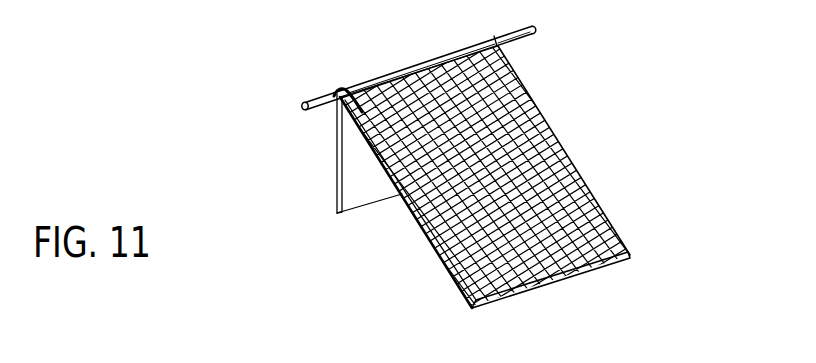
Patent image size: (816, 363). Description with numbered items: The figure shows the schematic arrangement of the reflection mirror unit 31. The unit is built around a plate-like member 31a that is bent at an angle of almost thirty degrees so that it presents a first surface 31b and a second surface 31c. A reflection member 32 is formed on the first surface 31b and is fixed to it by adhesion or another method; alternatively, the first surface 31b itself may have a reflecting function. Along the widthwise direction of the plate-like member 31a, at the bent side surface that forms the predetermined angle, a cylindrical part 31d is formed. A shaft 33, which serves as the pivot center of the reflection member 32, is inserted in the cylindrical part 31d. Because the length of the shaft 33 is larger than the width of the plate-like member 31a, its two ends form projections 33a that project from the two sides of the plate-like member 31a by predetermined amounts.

The reflection mirror unit 31 is at (547, 105).
The plate-like member 31a is at (275, 175).
The first surface 31b is at (414, 212).
The second surface 31c is at (357, 170).
The cylindrical part 31d is at (397, 70).
The reflection member 32 is at (563, 162).
The shaft 33 is at (340, 88).
The projections 33a is at (298, 110).